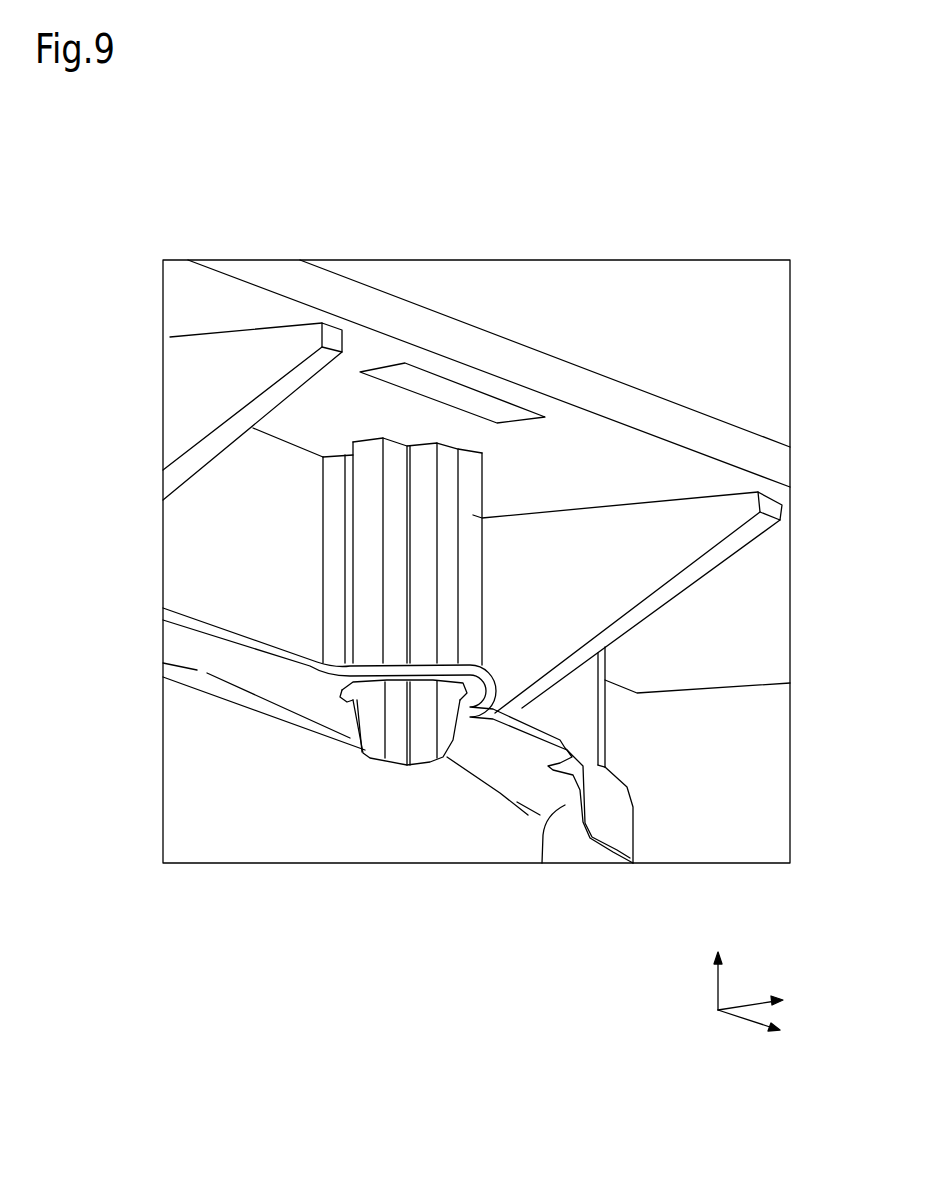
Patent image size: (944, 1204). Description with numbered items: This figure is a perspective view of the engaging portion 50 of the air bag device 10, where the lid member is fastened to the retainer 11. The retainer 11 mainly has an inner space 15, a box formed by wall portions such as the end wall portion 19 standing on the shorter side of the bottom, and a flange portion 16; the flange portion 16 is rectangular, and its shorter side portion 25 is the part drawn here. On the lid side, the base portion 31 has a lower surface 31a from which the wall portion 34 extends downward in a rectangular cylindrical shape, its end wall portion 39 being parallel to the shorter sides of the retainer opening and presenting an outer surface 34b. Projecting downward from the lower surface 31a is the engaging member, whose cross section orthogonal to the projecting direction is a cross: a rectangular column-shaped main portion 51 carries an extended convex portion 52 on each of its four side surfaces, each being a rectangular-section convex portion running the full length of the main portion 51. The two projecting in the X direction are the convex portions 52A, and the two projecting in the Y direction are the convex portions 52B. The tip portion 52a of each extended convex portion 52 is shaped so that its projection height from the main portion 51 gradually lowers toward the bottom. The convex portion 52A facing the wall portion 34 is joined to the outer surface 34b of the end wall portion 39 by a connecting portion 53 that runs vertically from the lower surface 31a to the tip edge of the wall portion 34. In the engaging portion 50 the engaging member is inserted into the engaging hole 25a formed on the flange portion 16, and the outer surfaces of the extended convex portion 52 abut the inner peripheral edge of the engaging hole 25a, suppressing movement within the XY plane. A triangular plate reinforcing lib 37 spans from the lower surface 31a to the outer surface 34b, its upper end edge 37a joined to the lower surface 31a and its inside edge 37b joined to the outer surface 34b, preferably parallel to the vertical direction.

The air bag device 10 is at (668, 355).
The base portion 31 is at (776, 462).
The lower surface of the base portion 31a is at (640, 450).
The reinforcing lib 37 is at (215, 400).
The upper end edge 37a is at (602, 503).
The inside edge 37b is at (492, 512).
The wall portion 34 is at (430, 645).
The end wall portion 39 is at (210, 540).
The outer surface of the wall portion 34b is at (210, 565).
The extended convex portion 52 is at (412, 694).
The convex portion 52A is at (345, 555).
The convex portion 52B is at (377, 610).
The connecting portion 53 is at (333, 575).
The tip portion 52a is at (370, 760).
The main portion 51 is at (405, 765).
The flange portion 16 is at (187, 650).
The shorter side portion 25 is at (398, 779).
The engaging hole 25a is at (445, 755).
The engaging portion 50 is at (340, 722).
The end wall portion 19 is at (275, 848).
The retainer 11 is at (326, 852).
The inner space 15 is at (403, 850).